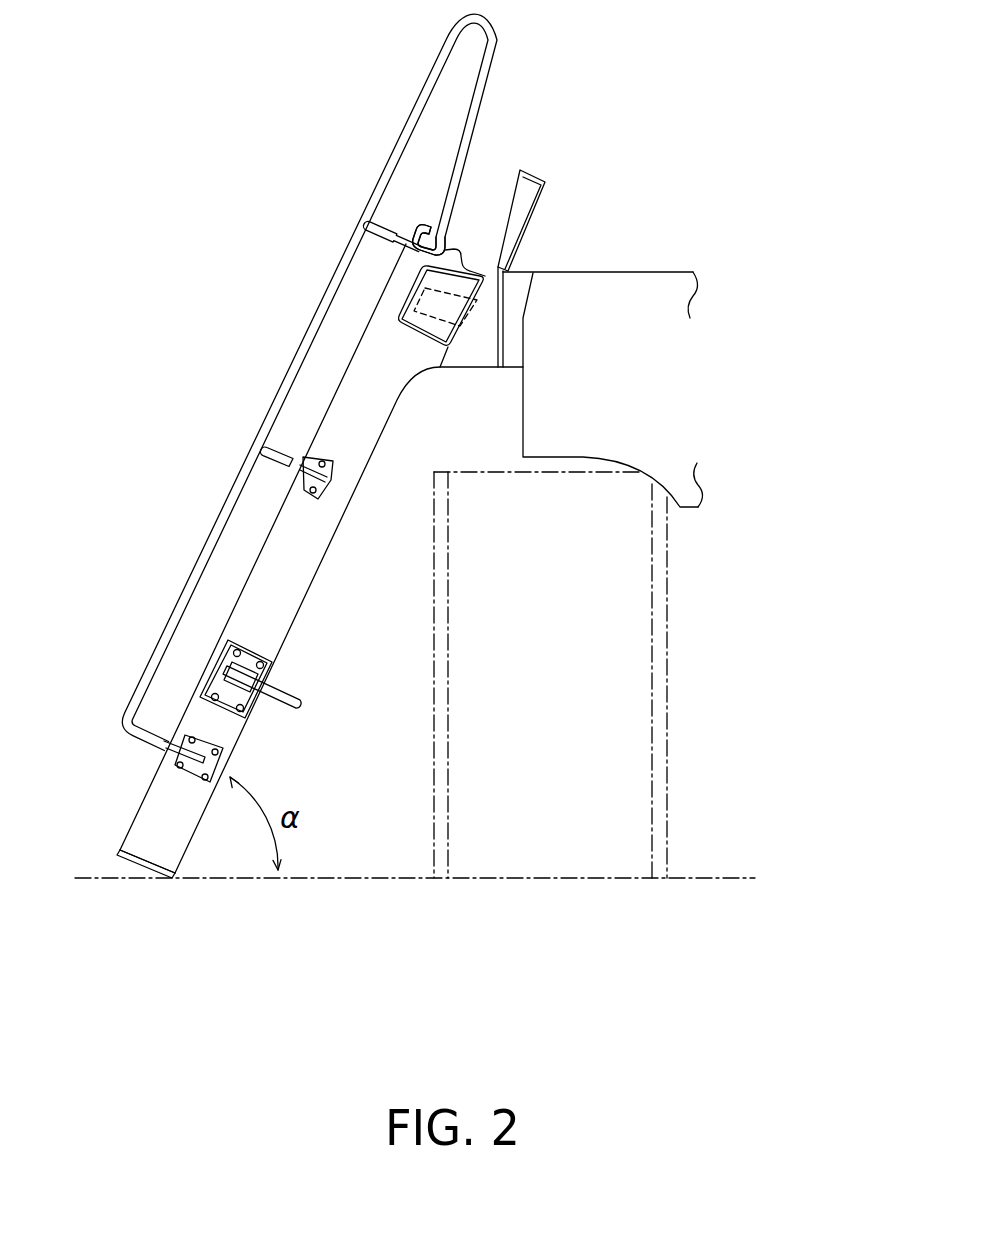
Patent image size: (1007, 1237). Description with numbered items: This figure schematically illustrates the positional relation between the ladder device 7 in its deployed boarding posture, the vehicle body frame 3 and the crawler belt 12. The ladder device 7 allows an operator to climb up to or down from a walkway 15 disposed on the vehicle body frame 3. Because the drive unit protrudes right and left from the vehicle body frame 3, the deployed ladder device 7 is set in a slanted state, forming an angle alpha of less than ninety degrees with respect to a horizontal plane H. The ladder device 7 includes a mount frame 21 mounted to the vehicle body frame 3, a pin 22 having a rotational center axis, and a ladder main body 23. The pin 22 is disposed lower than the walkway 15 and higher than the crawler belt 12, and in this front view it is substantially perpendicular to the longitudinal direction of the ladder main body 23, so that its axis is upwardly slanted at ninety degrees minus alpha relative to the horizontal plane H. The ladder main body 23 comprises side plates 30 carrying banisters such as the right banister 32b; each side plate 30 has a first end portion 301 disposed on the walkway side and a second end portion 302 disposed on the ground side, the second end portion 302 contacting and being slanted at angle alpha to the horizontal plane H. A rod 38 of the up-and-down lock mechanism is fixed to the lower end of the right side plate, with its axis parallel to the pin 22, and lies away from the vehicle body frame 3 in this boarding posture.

The vehicle body frame 3 is at (688, 342).
The ladder device 7 is at (280, 345).
The crawler belt 12 is at (432, 727).
The walkway 15 is at (606, 272).
The mount frame 21 is at (557, 172).
The pin 22 is at (465, 262).
The ladder main body 23 is at (330, 547).
The side plate 30 is at (144, 842).
The right banister 32b is at (240, 493).
The rod 38 is at (282, 702).
The first end portion 301 is at (419, 225).
The second end portion 302 is at (162, 853).
The horizontal plane H is at (722, 878).